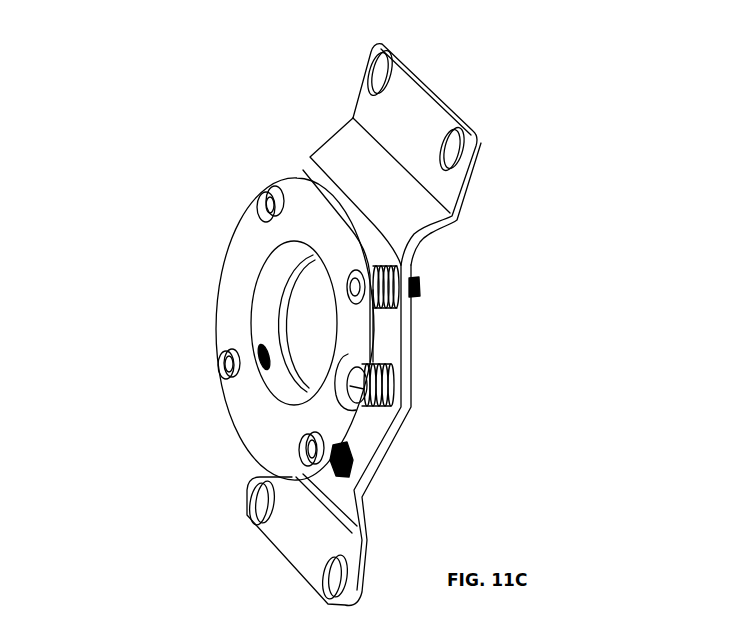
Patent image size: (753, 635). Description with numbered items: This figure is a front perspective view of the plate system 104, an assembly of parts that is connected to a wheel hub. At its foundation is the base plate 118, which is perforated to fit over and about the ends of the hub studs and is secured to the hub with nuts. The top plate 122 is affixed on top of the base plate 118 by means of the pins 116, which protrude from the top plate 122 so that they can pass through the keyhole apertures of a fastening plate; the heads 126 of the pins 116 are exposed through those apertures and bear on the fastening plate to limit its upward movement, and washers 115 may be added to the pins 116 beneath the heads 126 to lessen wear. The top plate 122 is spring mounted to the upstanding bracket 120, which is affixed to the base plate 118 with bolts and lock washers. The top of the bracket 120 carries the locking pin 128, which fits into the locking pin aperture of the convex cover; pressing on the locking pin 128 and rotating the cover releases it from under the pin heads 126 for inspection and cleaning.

The plate system 104 is at (328, 321).
The washer 115 is at (265, 134).
The pin 116 is at (453, 279).
The base plate 118 is at (445, 203).
The upstanding bracket 120 is at (411, 435).
The top plate 122 is at (221, 329).
The head 126 is at (166, 414).
The locking pin 128 is at (436, 413).